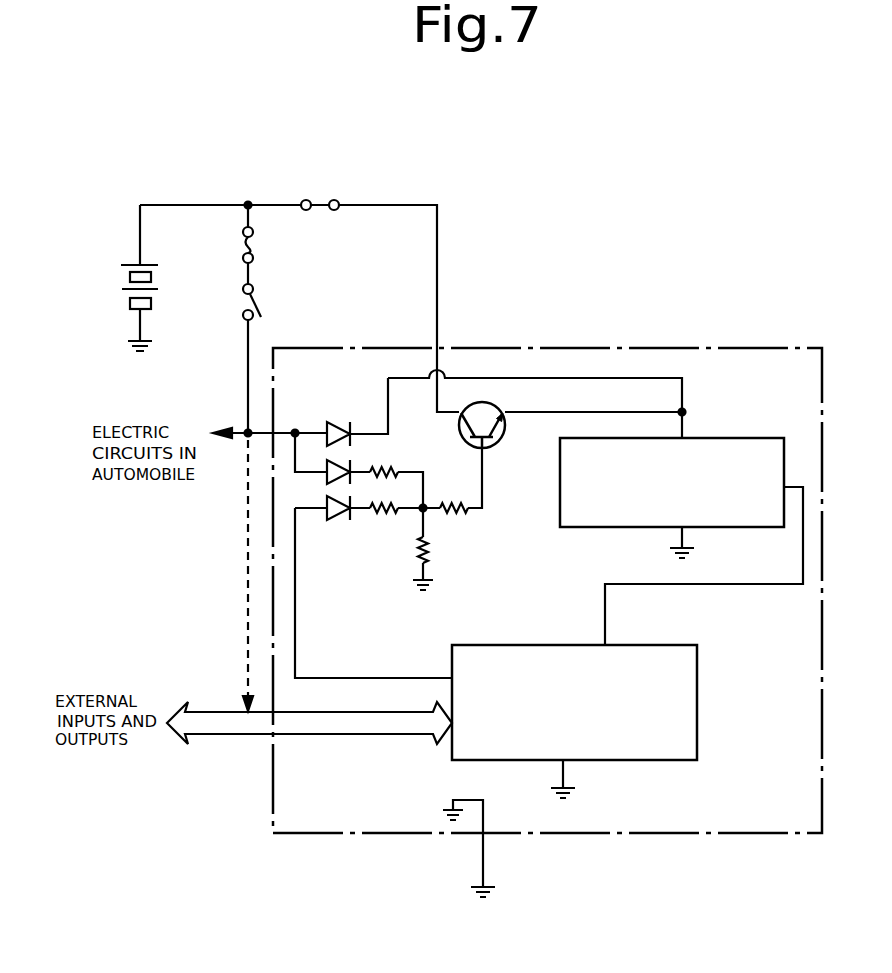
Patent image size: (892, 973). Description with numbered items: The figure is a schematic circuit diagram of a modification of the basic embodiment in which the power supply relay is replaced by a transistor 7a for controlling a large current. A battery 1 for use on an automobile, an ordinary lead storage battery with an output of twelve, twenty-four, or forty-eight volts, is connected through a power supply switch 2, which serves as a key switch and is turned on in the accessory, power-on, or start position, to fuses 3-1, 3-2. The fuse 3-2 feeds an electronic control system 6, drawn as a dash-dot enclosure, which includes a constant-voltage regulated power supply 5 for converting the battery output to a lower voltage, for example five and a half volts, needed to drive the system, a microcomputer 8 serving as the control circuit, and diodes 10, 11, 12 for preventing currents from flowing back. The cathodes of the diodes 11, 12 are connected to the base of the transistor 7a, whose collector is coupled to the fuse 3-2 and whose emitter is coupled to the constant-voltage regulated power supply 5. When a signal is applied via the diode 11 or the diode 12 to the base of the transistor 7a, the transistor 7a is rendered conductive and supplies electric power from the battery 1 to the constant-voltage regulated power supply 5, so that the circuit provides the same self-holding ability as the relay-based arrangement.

The battery 1 is at (160, 283).
The power supply switch 2 is at (263, 306).
The fuse 3-1 is at (258, 250).
The fuse 3-2 is at (326, 196).
The constant-voltage regulated power supply 5 is at (718, 438).
The electronic control system 6 is at (688, 349).
The transistor 7a is at (498, 446).
The microcomputer 8 is at (676, 645).
The diode 10 is at (337, 421).
The diode 11 is at (340, 464).
The diode 12 is at (337, 522).